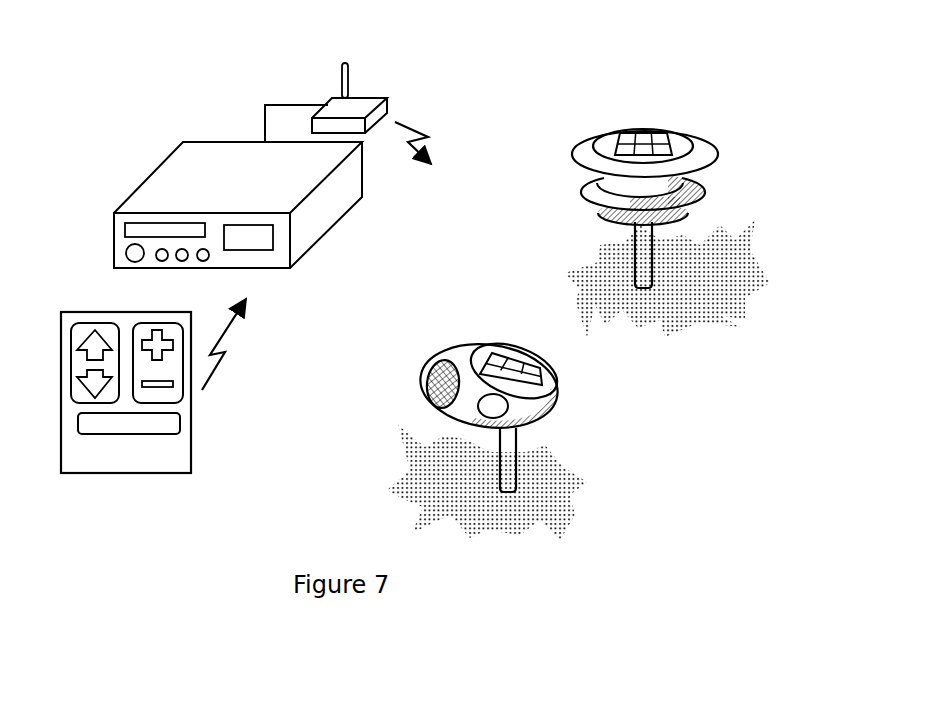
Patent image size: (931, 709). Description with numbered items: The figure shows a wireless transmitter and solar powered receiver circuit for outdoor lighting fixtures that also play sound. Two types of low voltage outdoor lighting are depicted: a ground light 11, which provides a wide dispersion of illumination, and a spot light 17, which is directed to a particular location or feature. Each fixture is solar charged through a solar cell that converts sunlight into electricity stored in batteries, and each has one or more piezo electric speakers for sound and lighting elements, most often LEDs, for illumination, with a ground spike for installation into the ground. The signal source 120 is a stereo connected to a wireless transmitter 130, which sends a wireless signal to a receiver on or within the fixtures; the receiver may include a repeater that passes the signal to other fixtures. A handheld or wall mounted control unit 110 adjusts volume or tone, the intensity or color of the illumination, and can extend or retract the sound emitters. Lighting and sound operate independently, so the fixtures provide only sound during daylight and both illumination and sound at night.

The ground light 11 is at (685, 50).
The spot light 17 is at (680, 416).
The control unit 110 is at (73, 475).
The signal source 120 is at (147, 183).
The wireless transmitter 130 is at (365, 97).